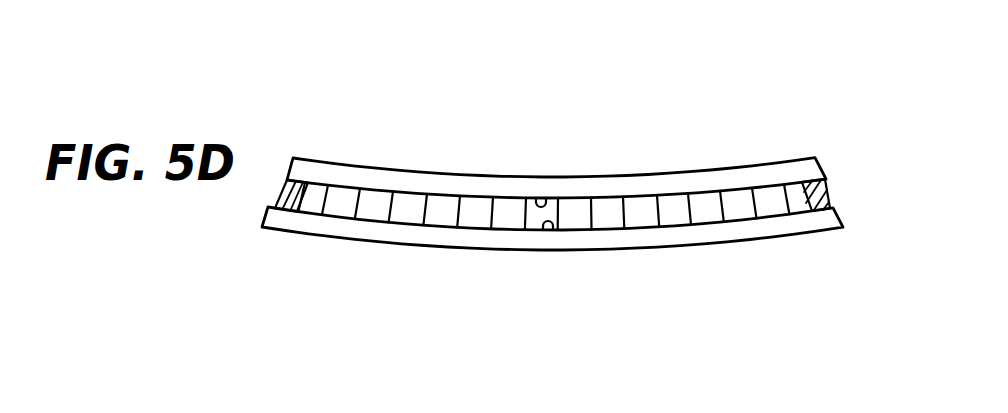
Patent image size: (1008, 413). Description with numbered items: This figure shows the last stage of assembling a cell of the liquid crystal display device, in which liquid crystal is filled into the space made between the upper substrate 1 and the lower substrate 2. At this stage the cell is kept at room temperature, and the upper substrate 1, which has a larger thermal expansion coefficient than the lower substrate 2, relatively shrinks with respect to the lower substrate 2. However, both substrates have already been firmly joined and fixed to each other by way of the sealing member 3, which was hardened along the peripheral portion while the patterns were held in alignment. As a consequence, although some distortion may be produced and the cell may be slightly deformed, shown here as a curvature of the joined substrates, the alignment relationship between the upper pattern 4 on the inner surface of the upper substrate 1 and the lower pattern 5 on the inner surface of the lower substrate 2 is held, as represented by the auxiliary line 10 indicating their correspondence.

The upper substrate 1 is at (803, 173).
The lower substrate 2 is at (812, 218).
The sealing member 3 is at (827, 190).
The upper pattern 4 is at (543, 204).
The lower pattern 5 is at (548, 224).
The auxiliary line 10 is at (490, 212).